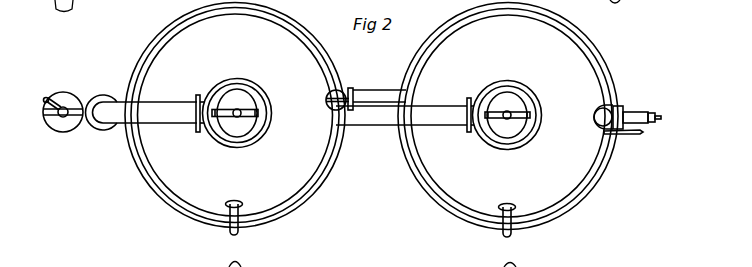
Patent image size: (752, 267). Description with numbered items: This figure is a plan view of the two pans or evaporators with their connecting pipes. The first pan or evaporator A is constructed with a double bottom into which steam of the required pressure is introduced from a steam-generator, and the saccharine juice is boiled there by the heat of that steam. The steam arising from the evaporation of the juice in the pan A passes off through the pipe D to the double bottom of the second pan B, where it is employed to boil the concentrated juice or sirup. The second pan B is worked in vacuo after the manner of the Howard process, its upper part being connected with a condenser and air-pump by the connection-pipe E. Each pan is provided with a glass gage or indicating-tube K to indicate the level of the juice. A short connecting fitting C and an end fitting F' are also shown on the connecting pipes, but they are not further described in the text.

The pan or evaporator A is at (508, 116).
The second pan B is at (235, 115).
The connecting rod with swivel disc C is at (366, 99).
The pipe D is at (405, 115).
The connection-pipe E is at (123, 112).
The end fitting / nozzle F' is at (627, 118).
The glass gage or indicating-tube K is at (371, 228).